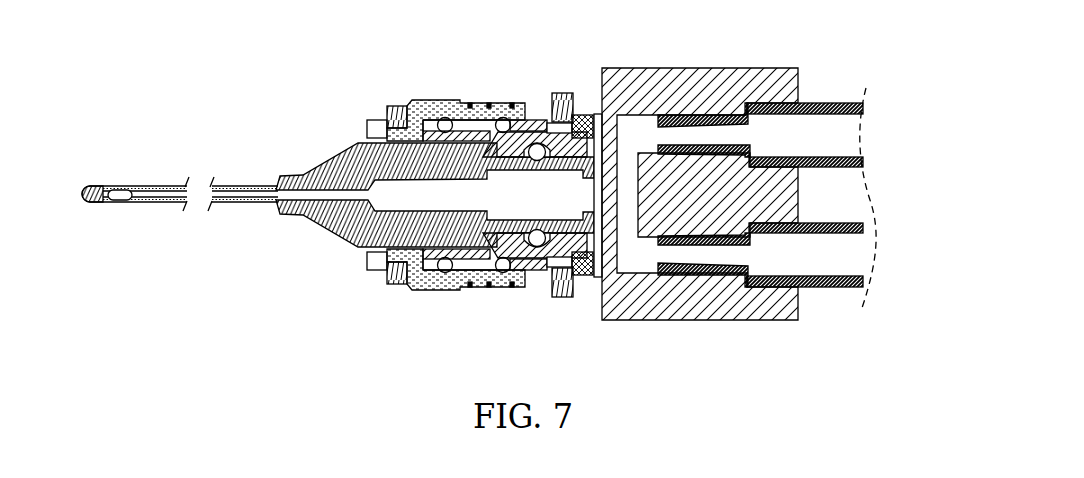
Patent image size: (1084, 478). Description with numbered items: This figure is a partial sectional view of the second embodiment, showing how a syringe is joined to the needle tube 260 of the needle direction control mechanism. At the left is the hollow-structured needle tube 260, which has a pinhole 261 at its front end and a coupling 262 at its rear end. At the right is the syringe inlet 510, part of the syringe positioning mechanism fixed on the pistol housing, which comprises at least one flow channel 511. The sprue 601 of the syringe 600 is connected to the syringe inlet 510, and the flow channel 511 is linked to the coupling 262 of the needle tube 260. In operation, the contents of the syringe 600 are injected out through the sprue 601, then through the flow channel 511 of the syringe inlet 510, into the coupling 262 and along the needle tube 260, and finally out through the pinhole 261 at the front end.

The needle tube 260 is at (220, 124).
The pinhole 261 is at (122, 195).
The coupling 262 is at (278, 178).
The syringe inlet 510 is at (798, 155).
The flow channel 511 is at (628, 140).
The syringe 600 is at (808, 102).
The sprue 601 is at (656, 132).